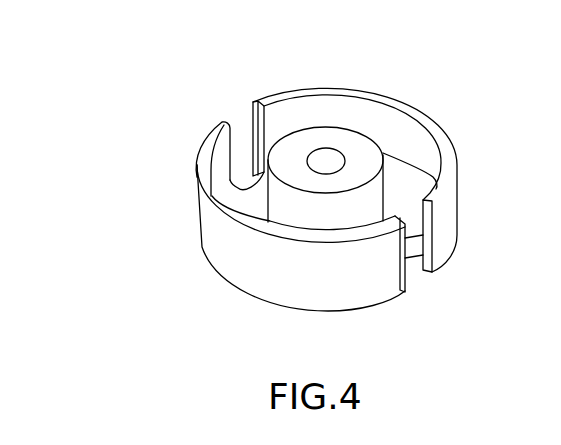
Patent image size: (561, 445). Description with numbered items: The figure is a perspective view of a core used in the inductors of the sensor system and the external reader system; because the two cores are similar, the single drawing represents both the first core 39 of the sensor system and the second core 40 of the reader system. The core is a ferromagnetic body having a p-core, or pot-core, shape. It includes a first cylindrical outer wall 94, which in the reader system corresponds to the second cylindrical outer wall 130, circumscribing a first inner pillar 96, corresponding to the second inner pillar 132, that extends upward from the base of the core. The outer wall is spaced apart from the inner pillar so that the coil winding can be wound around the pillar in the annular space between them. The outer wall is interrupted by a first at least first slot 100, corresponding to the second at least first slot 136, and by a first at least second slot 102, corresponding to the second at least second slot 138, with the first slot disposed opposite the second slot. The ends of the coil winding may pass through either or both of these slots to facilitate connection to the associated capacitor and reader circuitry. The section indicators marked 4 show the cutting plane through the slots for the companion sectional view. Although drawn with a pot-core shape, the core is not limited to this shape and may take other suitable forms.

The first core 39 is at (307, 185).
The second core 40 is at (307, 185).
The first cylindrical outer wall 94 is at (369, 174).
The second cylindrical outer wall 130 is at (398, 97).
The first inner pillar 96 is at (364, 136).
The second inner pillar 132 is at (335, 142).
The first at least first slot 100 is at (176, 145).
The second at least first slot 136 is at (228, 157).
The first at least second slot 102 is at (344, 261).
The second at least second slot 138 is at (412, 280).
The section line 4- 4 is at (240, 117).